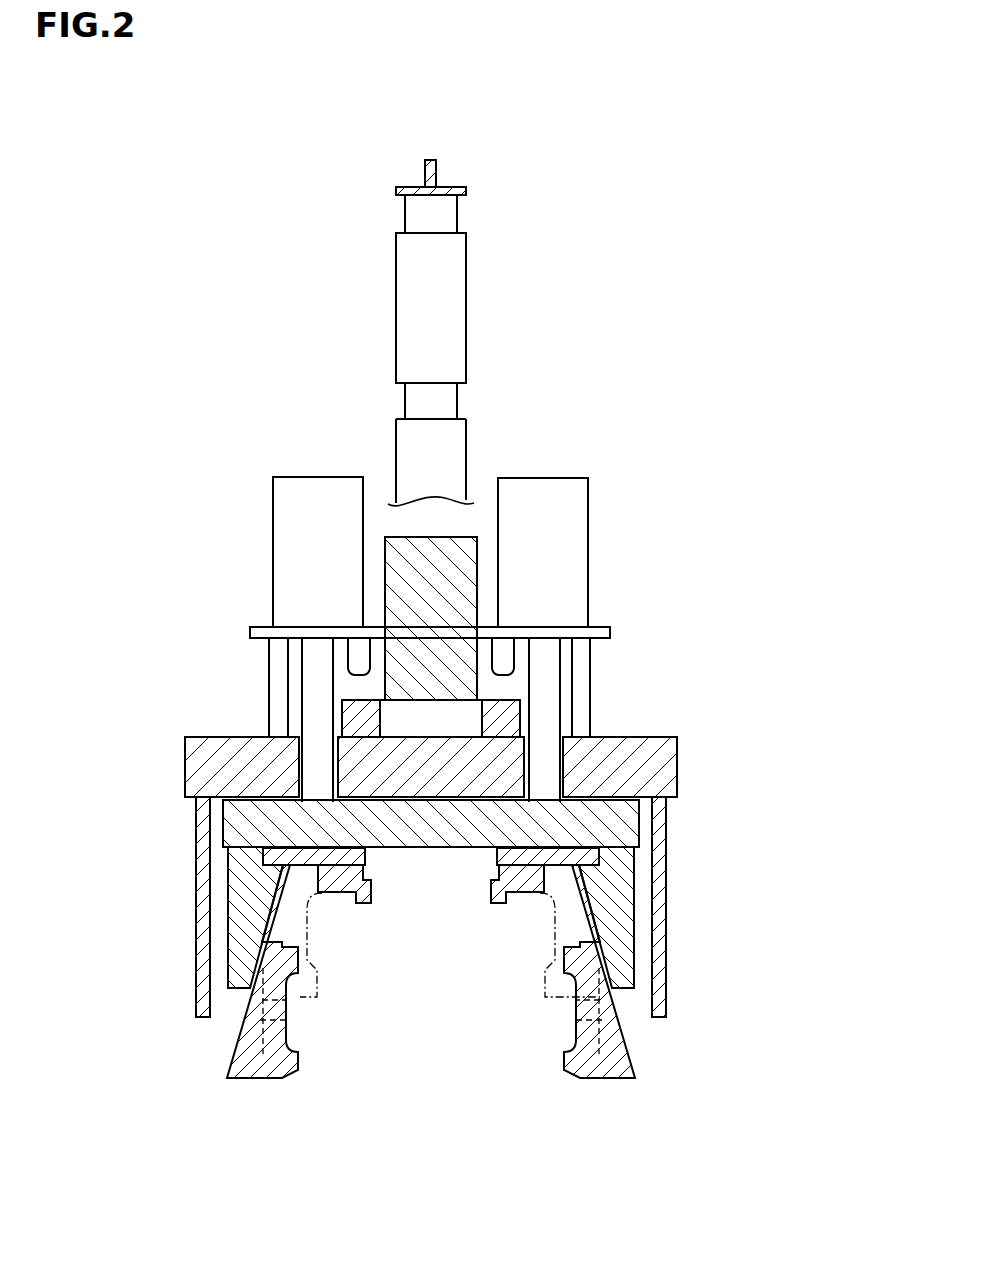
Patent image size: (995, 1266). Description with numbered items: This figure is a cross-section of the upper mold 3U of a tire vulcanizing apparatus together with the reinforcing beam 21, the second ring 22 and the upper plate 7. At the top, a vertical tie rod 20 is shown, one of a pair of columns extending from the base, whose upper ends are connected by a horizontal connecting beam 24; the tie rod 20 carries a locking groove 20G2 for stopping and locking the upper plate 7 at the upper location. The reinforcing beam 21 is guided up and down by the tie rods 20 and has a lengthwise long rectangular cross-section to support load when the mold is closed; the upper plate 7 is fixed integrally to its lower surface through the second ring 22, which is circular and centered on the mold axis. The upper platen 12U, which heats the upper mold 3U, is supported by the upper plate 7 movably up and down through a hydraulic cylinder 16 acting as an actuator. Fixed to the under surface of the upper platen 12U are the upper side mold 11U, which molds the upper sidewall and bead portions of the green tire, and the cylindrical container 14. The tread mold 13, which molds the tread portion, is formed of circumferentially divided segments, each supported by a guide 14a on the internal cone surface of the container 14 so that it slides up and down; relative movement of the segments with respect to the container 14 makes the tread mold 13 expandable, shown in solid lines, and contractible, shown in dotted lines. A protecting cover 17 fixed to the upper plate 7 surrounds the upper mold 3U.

The horizontal connecting beam 24 is at (450, 186).
The tie rod 20 is at (500, 350).
The locking groove 20G2 is at (441, 406).
The reinforcing beam 21 is at (477, 568).
The second ring 22 is at (508, 703).
The hydraulic cylinder 16 is at (273, 531).
The upper plate 7 is at (655, 757).
The upper mold 3U is at (167, 826).
The upper platen 12U is at (416, 840).
The cylindrical container 14 is at (248, 923).
The guide 14a is at (290, 895).
The upper side mold 11U is at (348, 877).
The tread mold 13 is at (262, 1080).
The protecting cover 17 is at (668, 908).